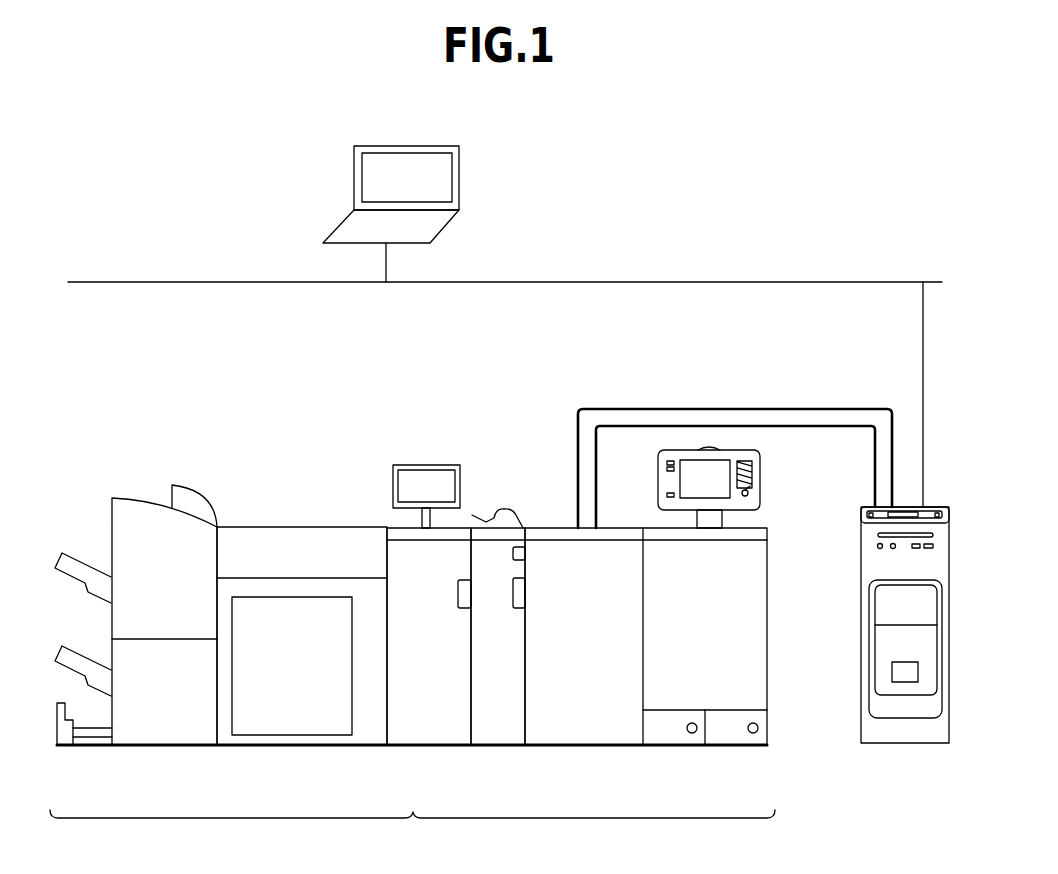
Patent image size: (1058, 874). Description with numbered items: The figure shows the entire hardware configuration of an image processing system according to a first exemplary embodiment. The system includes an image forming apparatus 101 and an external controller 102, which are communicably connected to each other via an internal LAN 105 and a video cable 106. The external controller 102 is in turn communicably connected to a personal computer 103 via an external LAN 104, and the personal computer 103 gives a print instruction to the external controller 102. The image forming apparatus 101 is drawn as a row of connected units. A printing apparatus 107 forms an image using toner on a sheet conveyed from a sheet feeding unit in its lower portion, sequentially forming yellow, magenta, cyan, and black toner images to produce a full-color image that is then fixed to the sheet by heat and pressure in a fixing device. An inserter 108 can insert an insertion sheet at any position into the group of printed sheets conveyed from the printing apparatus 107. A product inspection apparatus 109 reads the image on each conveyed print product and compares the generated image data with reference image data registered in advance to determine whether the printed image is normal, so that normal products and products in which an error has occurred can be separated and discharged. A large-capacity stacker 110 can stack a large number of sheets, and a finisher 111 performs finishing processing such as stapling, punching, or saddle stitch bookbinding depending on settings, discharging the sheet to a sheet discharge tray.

The image forming apparatus 101 is at (412, 659).
The external controller 102 is at (905, 745).
The personal computer 103 is at (354, 176).
The external LAN 104 is at (800, 282).
The internal LAN 105 is at (818, 428).
The video cable 106 is at (792, 409).
The printing apparatus 107 is at (712, 747).
The inserter 108 is at (497, 747).
The product inspection apparatus 109 is at (425, 747).
The large-capacity stacker 110 is at (293, 747).
The finisher 111 is at (160, 747).